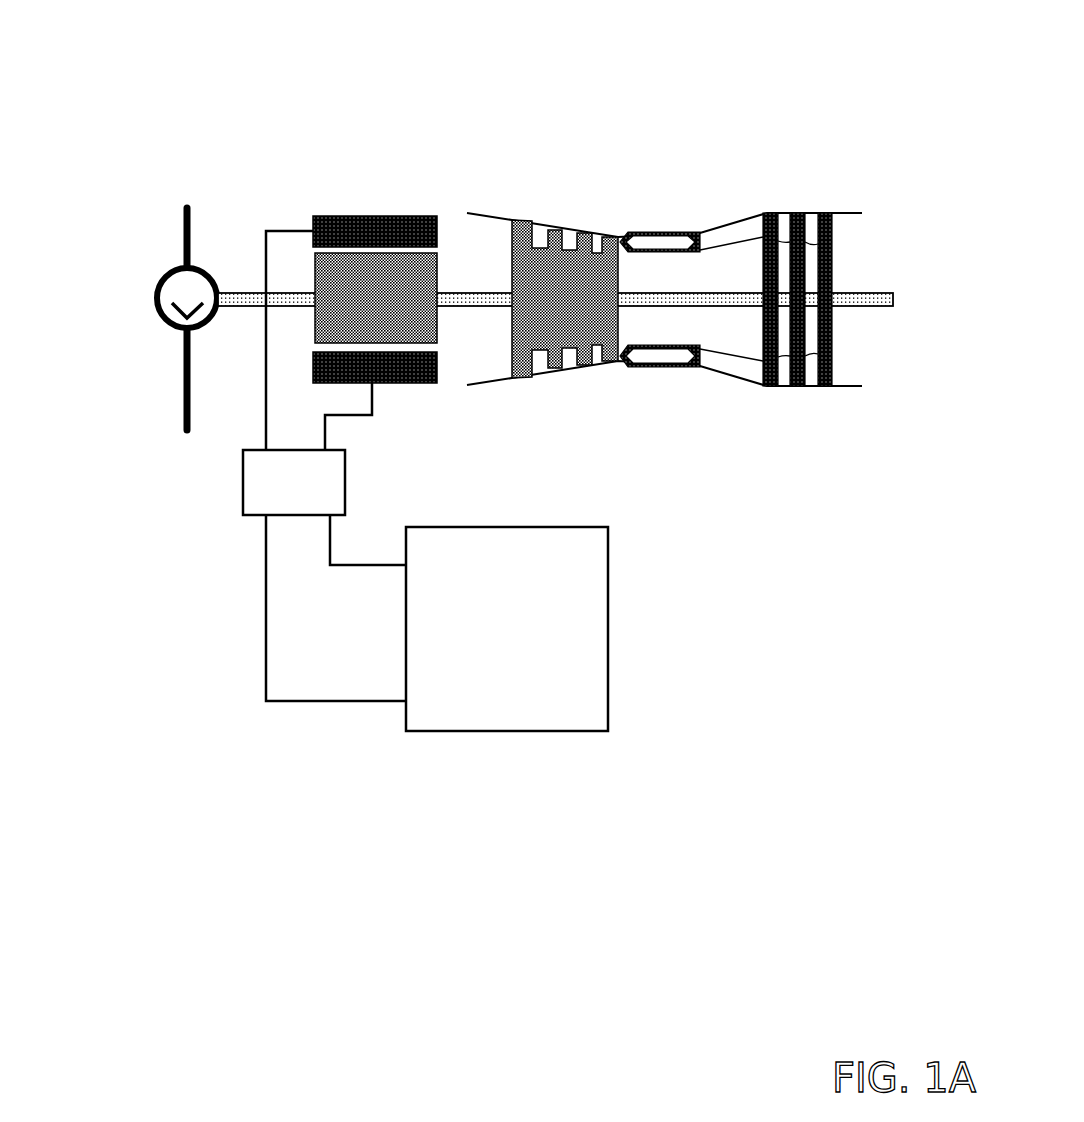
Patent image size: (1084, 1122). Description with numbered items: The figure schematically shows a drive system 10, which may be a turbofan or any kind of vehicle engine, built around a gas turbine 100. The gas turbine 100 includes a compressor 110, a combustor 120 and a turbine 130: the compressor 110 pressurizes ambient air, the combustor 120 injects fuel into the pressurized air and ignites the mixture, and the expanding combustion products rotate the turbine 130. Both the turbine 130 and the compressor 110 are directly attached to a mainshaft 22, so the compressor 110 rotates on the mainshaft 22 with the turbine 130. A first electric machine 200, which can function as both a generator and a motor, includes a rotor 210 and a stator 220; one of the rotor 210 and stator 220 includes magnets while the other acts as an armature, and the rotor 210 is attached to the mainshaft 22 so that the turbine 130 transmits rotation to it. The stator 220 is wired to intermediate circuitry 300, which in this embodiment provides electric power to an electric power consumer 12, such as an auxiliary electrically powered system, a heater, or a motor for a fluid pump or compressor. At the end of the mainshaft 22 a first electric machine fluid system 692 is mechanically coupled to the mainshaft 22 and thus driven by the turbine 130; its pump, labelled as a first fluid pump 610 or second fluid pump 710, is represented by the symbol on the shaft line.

The system 10 is at (245, 68).
The electric power consumer 12 is at (507, 629).
The mainshaft 22 is at (878, 293).
The gas turbine 100 is at (664, 270).
The compressor 110 is at (518, 237).
The combustor 120 is at (691, 248).
The turbine 130 is at (800, 213).
The first electric machine 200 is at (398, 252).
The rotor 210 is at (443, 271).
The stator 220 is at (377, 216).
The intermediate circuitry 300 is at (200, 490).
The first fluid pump 610 is at (131, 284).
The second fluid pump 710 is at (158, 283).
The first electric machine fluid system 692 is at (127, 337).